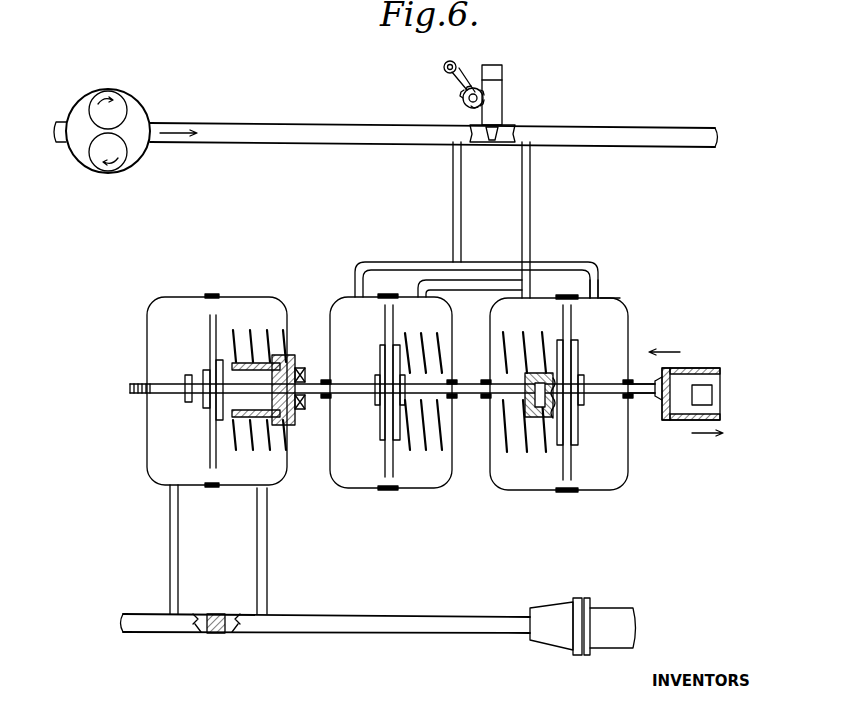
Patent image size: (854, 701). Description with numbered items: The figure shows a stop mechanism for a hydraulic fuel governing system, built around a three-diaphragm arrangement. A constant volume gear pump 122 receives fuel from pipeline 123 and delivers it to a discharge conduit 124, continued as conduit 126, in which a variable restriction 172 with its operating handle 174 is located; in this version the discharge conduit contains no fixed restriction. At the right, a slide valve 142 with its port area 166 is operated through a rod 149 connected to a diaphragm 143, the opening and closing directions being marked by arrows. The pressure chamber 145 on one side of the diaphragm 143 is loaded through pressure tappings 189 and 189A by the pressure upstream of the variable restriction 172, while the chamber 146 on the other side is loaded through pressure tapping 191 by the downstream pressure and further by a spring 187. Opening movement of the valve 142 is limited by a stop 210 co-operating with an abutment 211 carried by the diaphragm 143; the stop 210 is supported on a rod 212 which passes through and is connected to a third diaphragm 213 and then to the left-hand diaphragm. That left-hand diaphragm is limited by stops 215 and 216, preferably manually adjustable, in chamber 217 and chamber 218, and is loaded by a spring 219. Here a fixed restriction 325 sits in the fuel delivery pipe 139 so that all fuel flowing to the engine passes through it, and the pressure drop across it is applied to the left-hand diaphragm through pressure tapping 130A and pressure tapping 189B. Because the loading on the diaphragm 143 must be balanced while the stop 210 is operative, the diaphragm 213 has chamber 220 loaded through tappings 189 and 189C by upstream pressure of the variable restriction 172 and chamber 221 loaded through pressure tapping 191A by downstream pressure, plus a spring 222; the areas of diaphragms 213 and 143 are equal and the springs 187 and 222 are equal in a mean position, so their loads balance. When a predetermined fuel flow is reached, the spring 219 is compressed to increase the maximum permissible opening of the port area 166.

The constant volume gear pump 122 is at (118, 102).
The pipeline 123 is at (60, 120).
The discharge conduit 124 is at (226, 133).
The conduit continuation 126 is at (626, 137).
The variable restriction 172 is at (504, 122).
The valve operating handle 174 is at (452, 86).
The pressure tapping 189 is at (453, 192).
The pressure tapping 191 is at (531, 168).
The pressure tapping 189C is at (362, 265).
The pressure tapping 189A is at (596, 272).
The pressure tapping 189B is at (268, 546).
The pressure tapping 191A is at (474, 282).
The spring 187 is at (546, 330).
The pressure chamber 145 is at (618, 306).
The chamber 146 is at (514, 482).
The diaphragm 143 is at (575, 330).
The slide valve 142 is at (668, 366).
The port area 166 is at (704, 406).
The rod 149 is at (612, 390).
The stop 210 is at (540, 420).
The abutment 211 is at (556, 408).
The rod 212 is at (470, 396).
The diaphragm 213 is at (378, 466).
The stop 215 is at (143, 394).
The stop 216 is at (286, 352).
The chamber 217 is at (162, 305).
The chamber 218 is at (245, 305).
The spring 219 is at (248, 455).
The chamber 220 is at (340, 464).
The chamber 221 is at (410, 305).
The spring 222 is at (426, 468).
The pressure tapping 130A is at (170, 552).
The fuel delivery pipe 139 is at (455, 614).
The fixed restriction 325 is at (218, 634).